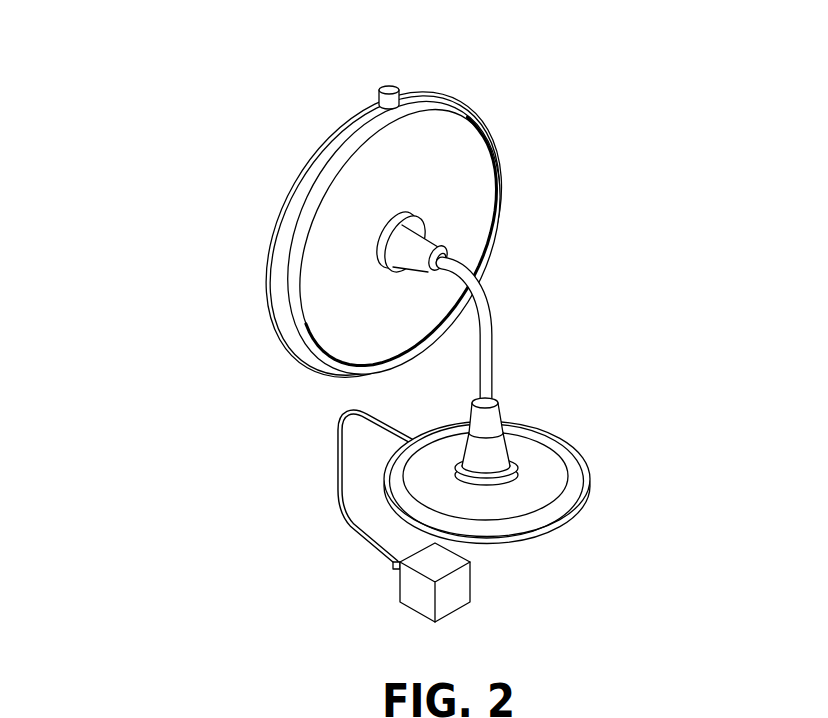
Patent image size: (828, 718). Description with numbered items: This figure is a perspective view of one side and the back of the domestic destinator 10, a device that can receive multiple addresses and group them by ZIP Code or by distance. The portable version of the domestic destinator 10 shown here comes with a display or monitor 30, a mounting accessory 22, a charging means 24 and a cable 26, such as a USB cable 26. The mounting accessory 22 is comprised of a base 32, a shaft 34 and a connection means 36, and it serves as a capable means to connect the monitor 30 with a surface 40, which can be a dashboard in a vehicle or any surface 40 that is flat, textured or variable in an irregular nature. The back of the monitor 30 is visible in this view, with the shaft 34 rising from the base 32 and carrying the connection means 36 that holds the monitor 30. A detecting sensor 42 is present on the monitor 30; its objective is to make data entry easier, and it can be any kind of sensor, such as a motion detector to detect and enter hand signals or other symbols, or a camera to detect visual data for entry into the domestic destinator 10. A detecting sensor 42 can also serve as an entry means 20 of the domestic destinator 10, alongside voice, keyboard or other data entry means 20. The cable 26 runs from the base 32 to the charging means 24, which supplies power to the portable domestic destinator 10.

The domestic destinator 10 is at (137, 142).
The entry means 20 is at (477, 200).
The mounting accessory 22 is at (598, 362).
The charging means 24 is at (457, 590).
The cable 26 is at (340, 467).
The display or monitor 30 is at (477, 145).
The base 32 is at (550, 465).
The shaft 34 is at (483, 317).
The connection means 36 is at (540, 537).
The surface 40 is at (635, 536).
The detecting sensor 42 is at (390, 90).